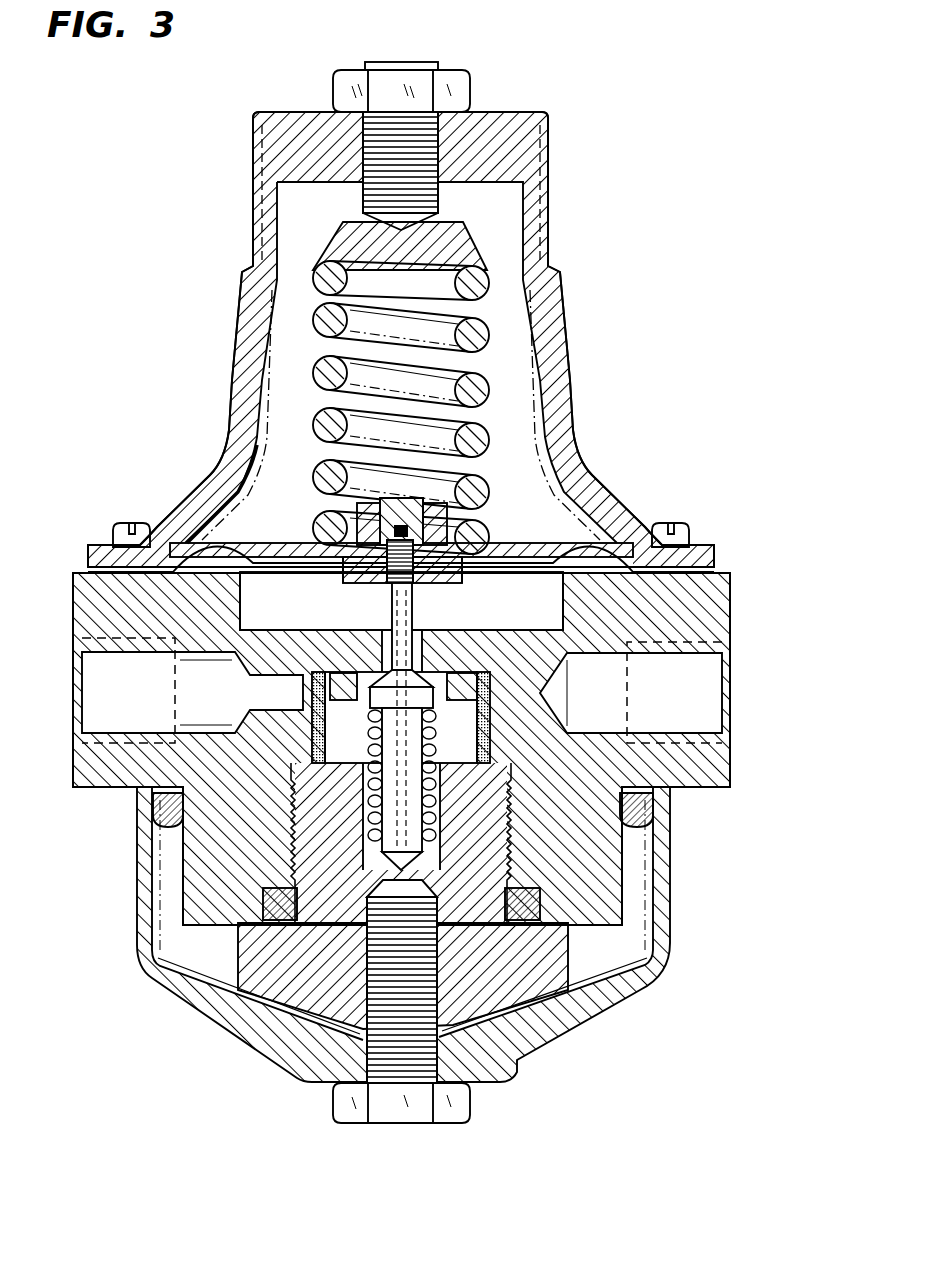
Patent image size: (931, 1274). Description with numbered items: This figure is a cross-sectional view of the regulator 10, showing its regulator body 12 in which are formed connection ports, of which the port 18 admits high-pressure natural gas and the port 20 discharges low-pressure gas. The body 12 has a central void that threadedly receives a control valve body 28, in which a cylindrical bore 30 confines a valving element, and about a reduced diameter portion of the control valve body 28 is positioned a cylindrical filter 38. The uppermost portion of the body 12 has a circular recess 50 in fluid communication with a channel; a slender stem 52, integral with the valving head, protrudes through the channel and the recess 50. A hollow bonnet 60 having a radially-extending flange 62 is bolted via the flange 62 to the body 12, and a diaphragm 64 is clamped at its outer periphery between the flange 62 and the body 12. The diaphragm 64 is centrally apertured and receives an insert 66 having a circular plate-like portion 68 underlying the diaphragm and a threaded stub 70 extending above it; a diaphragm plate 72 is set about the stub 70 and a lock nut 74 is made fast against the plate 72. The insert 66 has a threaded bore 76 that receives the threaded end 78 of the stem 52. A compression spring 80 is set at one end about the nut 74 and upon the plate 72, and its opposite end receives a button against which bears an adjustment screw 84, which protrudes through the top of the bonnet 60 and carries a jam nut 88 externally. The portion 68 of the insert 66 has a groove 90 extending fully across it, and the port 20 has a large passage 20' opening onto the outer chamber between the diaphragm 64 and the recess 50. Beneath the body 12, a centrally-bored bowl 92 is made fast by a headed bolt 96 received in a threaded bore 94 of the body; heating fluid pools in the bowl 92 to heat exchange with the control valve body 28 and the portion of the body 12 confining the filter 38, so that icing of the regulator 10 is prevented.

The regulator 10 is at (188, 241).
The regulator body 12 is at (733, 586).
The port 18 is at (100, 716).
The port 20 is at (673, 692).
The passage 20' is at (592, 691).
The control valve body 28 is at (246, 961).
The cylindrical bore 30 is at (438, 682).
The cylindrical filter 38 is at (492, 720).
The circular recess 50 is at (572, 549).
The stem 52 is at (372, 618).
The bonnet 60 is at (233, 382).
The flange 62 is at (105, 541).
The diaphragm 64 is at (236, 474).
The insert 66 is at (414, 506).
The plate-like portion 68 is at (452, 566).
The threaded stub 70 is at (392, 510).
The diaphragm plate 72 is at (541, 537).
The lock nut 74 is at (357, 508).
The threaded bore 76 is at (426, 522).
The threaded end 78 is at (412, 602).
The compression spring 80 is at (321, 340).
The adjustment screw 84 is at (364, 196).
The jam nut 88 is at (469, 92).
The groove 90 is at (342, 583).
The bowl 92 is at (556, 1034).
The threaded bore 94 is at (440, 1008).
The headed bolt 96 is at (466, 1105).